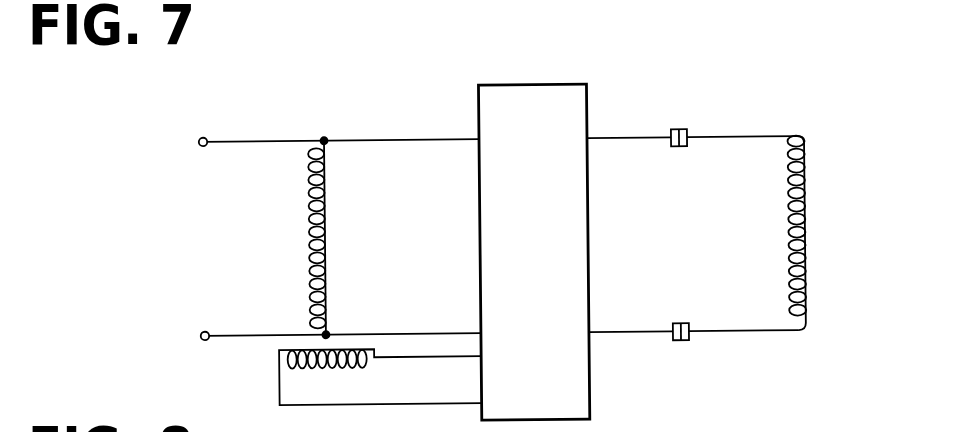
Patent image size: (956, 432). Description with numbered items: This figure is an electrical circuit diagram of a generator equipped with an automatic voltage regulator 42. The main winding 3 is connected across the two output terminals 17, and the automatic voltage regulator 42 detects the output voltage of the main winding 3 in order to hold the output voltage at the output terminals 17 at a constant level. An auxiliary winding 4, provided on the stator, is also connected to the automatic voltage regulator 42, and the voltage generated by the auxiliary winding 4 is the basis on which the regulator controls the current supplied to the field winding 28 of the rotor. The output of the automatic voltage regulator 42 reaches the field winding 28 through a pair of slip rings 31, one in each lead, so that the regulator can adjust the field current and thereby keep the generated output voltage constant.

The output terminals 17 is at (208, 136).
The main winding 3 is at (329, 228).
The auxiliary winding 4 is at (333, 350).
The automatic voltage regulator 42 is at (590, 111).
The slip ring 31 is at (688, 131).
The field winding 28 is at (808, 193).